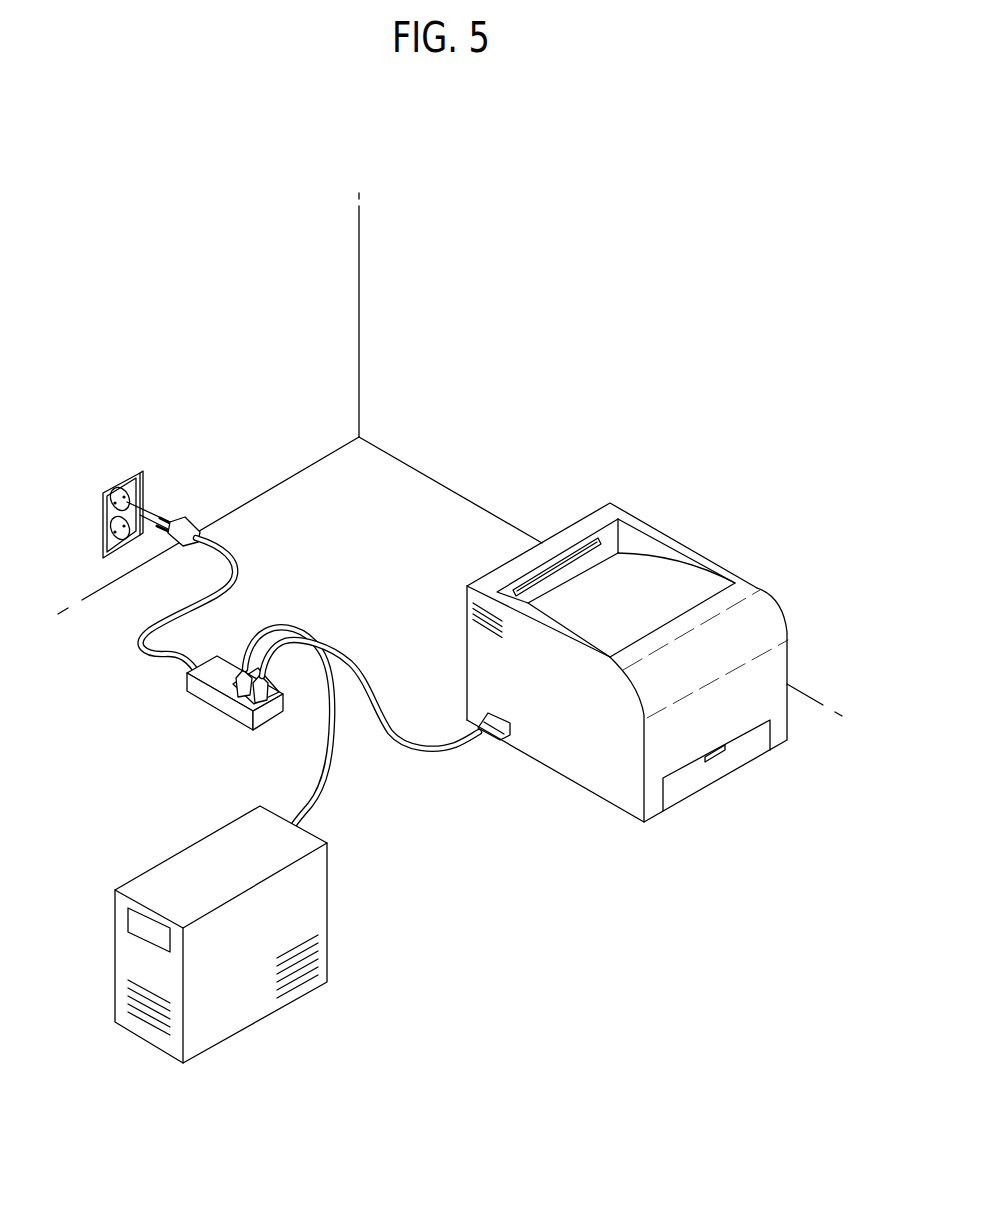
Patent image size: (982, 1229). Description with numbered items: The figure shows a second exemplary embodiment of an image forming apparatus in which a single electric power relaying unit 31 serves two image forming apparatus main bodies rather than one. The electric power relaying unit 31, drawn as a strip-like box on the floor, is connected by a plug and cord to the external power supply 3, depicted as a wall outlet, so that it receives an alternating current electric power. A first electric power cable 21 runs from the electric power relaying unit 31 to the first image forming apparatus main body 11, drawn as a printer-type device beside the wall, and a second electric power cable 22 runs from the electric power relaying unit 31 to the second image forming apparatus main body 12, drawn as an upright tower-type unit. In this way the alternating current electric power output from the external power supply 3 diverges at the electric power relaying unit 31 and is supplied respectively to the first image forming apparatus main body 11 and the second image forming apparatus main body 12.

The external power supply 3 is at (101, 476).
The first image forming apparatus main body 11 is at (704, 531).
The second image forming apparatus main body 12 is at (265, 1043).
The first electric power cable 21 is at (443, 749).
The second electric power cable 22 is at (335, 785).
The electric power relaying unit 31 is at (193, 713).